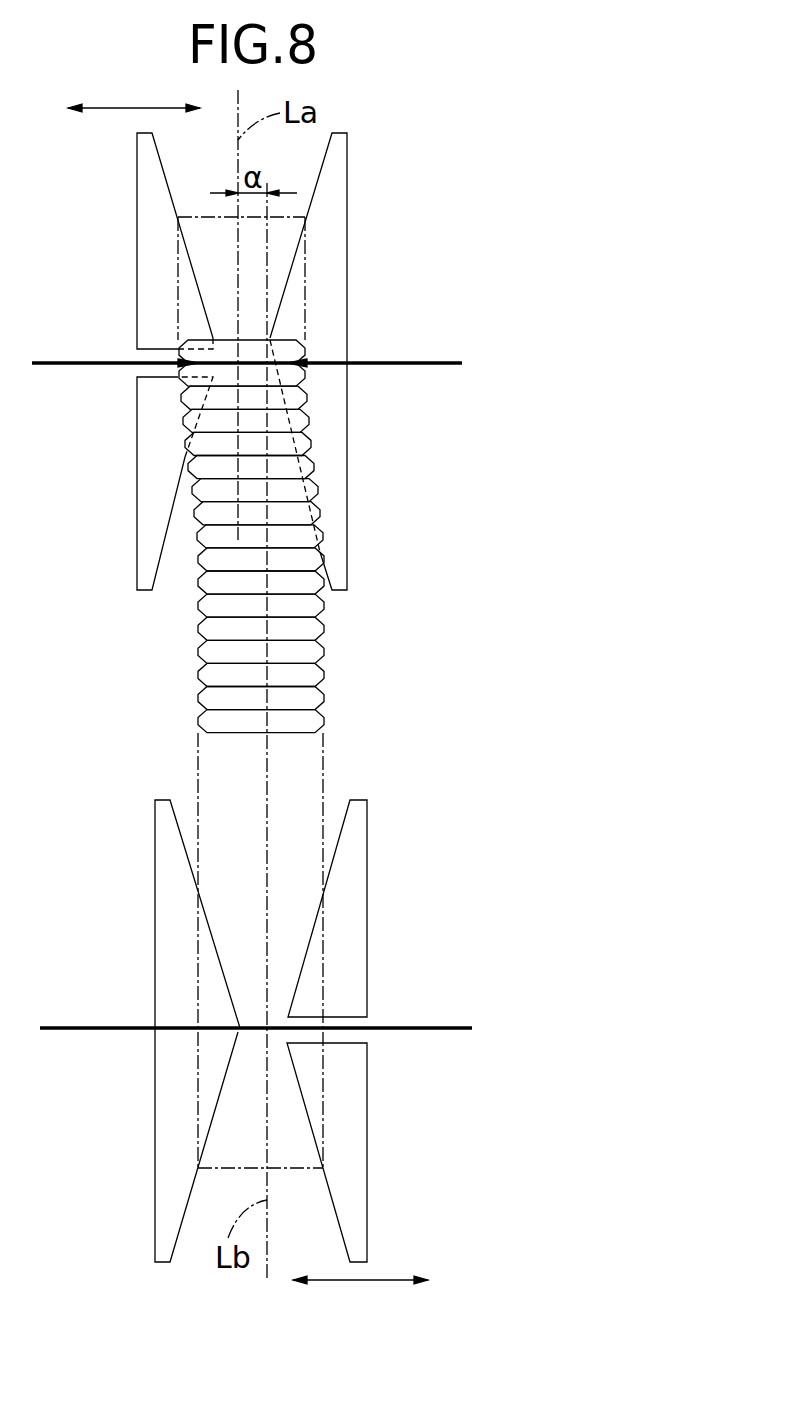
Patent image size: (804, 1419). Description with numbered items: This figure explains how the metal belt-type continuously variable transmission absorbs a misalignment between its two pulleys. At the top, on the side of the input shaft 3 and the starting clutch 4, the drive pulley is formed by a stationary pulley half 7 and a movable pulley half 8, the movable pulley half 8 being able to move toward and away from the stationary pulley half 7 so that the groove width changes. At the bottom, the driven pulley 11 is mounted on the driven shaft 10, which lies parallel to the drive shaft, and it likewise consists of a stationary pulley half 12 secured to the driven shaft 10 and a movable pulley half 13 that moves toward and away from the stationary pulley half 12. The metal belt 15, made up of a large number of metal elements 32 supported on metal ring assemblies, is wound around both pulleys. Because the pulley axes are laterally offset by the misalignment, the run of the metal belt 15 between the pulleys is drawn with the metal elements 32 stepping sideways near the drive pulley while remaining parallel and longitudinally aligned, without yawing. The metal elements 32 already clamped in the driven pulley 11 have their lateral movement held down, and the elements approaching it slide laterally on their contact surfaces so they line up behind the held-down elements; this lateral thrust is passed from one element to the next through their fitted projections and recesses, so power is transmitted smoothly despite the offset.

The input shaft 3 is at (427, 361).
The starting clutch 4 is at (265, 361).
The stationary pulley half 7 is at (348, 311).
The movable pulley half 8 is at (150, 279).
The driven shaft 10 is at (427, 1027).
The driven pulley 11 is at (284, 1031).
The stationary pulley half 12 is at (172, 960).
The movable pulley half 13 is at (348, 937).
The metal belt 15 is at (295, 536).
The metal elements 32 is at (210, 702).